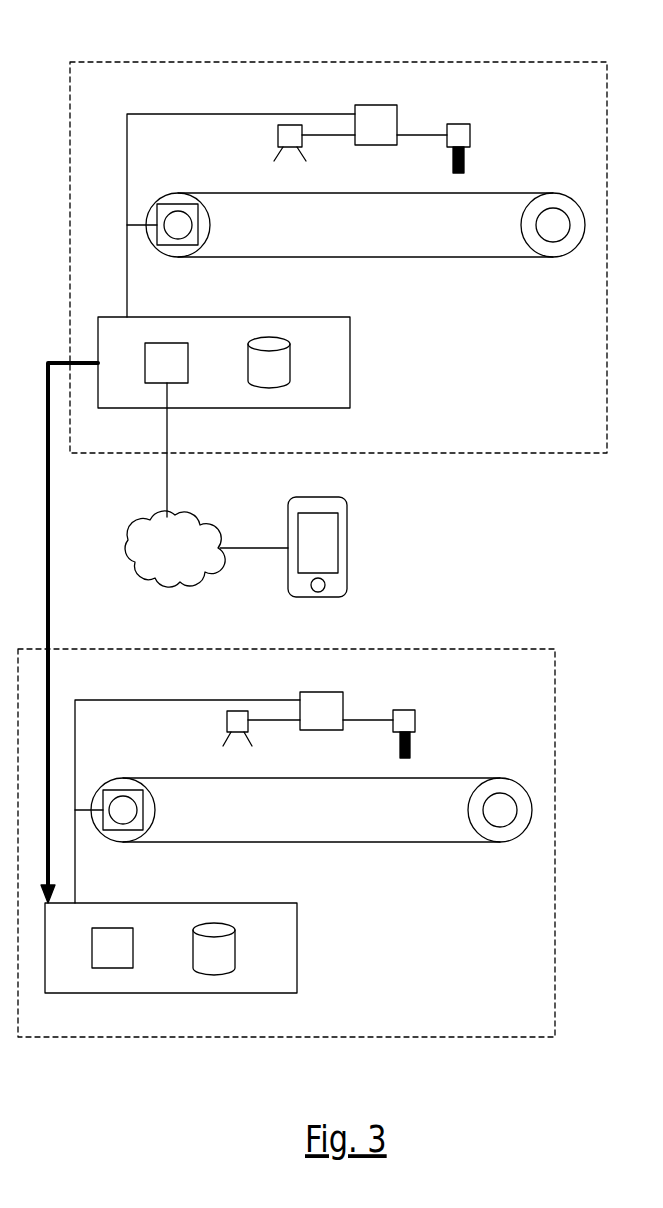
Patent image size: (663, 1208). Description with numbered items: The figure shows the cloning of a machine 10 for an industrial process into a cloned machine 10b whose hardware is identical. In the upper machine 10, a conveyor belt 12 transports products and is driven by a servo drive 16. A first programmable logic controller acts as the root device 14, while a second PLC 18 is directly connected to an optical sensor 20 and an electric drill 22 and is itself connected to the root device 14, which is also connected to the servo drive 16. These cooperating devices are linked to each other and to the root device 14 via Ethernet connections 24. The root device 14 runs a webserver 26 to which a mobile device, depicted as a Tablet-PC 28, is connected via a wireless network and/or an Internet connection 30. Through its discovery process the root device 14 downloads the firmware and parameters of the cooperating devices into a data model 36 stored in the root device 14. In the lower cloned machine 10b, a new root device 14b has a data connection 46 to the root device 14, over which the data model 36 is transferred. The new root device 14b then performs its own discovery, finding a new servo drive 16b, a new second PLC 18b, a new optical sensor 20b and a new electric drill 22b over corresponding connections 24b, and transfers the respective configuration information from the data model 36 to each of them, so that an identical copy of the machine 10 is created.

The machine 10 is at (500, 61).
The Ethernet connections 24 is at (235, 113).
The optical sensor 20 is at (276, 137).
The second PLC 18 is at (376, 125).
The electric drill 22 is at (465, 123).
The conveyor belt 12 is at (507, 191).
The servo drive 16 is at (173, 248).
The root device 14 is at (355, 340).
The Internet connection 30 is at (206, 465).
The data model 36 is at (241, 656).
The Tablet-PC 28 is at (350, 530).
The data connection 46 is at (56, 600).
The cloned machine 10b is at (458, 648).
The second network lines 24b is at (234, 801).
The new optical sensor 20b is at (249, 730).
The new second PLC 18b is at (321, 711).
The new electric drill 22b is at (410, 712).
The new servo drive 16b is at (118, 786).
The new root device 14b is at (297, 935).
The webserver 26 is at (112, 948).